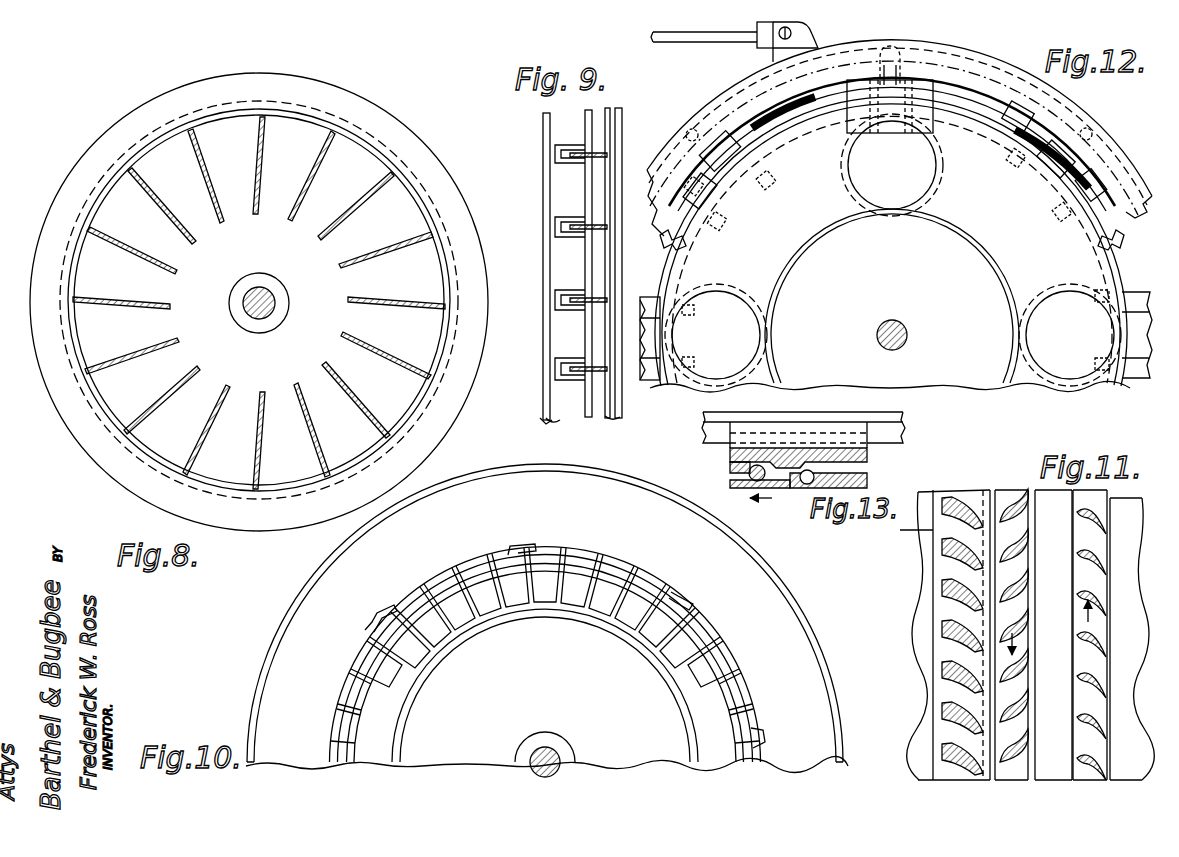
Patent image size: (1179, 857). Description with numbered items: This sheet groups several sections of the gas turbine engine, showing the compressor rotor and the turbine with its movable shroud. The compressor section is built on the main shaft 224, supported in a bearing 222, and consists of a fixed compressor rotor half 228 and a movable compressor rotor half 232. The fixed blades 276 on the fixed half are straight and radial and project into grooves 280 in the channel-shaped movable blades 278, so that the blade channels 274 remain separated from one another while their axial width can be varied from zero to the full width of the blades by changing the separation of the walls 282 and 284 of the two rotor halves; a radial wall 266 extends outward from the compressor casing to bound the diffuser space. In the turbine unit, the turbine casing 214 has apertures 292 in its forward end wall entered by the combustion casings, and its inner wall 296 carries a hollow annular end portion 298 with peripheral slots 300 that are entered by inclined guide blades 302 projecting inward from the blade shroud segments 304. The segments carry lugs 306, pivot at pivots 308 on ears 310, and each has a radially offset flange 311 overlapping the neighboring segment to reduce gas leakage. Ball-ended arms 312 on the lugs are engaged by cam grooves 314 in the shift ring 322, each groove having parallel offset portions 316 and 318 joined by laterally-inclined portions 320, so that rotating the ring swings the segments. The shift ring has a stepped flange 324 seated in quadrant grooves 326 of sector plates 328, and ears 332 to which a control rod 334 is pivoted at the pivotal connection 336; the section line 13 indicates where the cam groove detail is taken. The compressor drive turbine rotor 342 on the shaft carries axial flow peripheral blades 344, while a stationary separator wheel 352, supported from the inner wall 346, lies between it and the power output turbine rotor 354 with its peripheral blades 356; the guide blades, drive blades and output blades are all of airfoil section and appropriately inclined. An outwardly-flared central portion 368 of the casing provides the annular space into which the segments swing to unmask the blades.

In FIG. 12, the section line 13— 13 is at (822, 62).
In FIG. 10, the turbine casing 214 is at (822, 626).
In FIG. 8, the bearing 222 is at (264, 330).
In FIG. 8, the main shaft 224 is at (274, 306).
In FIG. 12, the main shaft 224 is at (907, 335).
In FIG. 10, the main shaft 224 is at (551, 746).
In FIG. 9, the fixed compressor rotor half 228 is at (612, 108).
In FIG. 9, the movable compressor rotor half 232 is at (555, 113).
In FIG. 8, the radial wall 266 is at (440, 424).
In FIG. 9, the radial wall 266 is at (623, 136).
In FIG. 12, the radial wall 266 is at (894, 138).
In FIG. 8, the blade channels 274 is at (358, 168).
In FIG. 9, the blade channels 274 is at (600, 345).
In FIG. 8, the fixed blades 276 is at (130, 270).
In FIG. 9, the fixed blades 276 is at (596, 420).
In FIG. 9, the movable blades 278 is at (570, 312).
In FIG. 9, the grooves 280 is at (568, 228).
In FIG. 9, the wall of fixed rotor half 282 is at (615, 408).
In FIG. 9, the wall of movable rotor half 284 is at (586, 412).
In FIG. 12, the apertures 292 is at (718, 292).
In FIG. 12, the inner wall of turbine casing 296 is at (1000, 258).
In FIG. 12, the hollow annular end portion 298 is at (890, 244).
In FIG. 10, the hollow annular end portion 298 is at (505, 622).
In FIG. 11, the hollow annular end portion 298 is at (922, 638).
In FIG. 11, the peripheral slots 300 is at (925, 536).
In FIG. 10, the guide blades 302 is at (443, 650).
In FIG. 11, the guide blades 302 is at (966, 498).
In FIG. 10, the blade shroud segments 304 is at (463, 570).
In FIG. 12, the lugs 306 is at (878, 130).
In FIG. 12, the pivots 308 is at (886, 46).
In FIG. 12, the ears 310 is at (800, 112).
In FIG. 12, the radially offset flange 311 is at (665, 236).
In FIG. 10, the radially offset flange 311 is at (538, 545).
In FIG. 13, the ball-ended arms 312 is at (730, 467).
In FIG. 12, the cam grooves 314 is at (920, 52).
In FIG. 13, the cam grooves 314 is at (802, 462).
In FIG. 13, the parallel offset portion 316 is at (736, 490).
In FIG. 13, the parallel offset portion 318 is at (805, 486).
In FIG. 13, the laterally-inclined portions 320 is at (785, 490).
In FIG. 12, the shift ring 322 is at (1130, 150).
In FIG. 13, the shift ring 322 is at (862, 467).
In FIG. 12, the stepped flange 324 is at (1018, 78).
In FIG. 13, the stepped flange 324 is at (828, 440).
In FIG. 13, the quadrant grooves 326 is at (890, 406).
In FIG. 12, the sector plates 328 is at (1010, 110).
In FIG. 12, the ears of shift ring 332 is at (752, 58).
In FIG. 12, the control rod 334 is at (690, 42).
In FIG. 12, the pivotal connection 336 is at (750, 20).
In FIG. 11, the compressor drive turbine rotor 342 is at (1012, 780).
In FIG. 11, the axial flow peripheral blades 344 is at (1012, 490).
In FIG. 11, the inner wall of turbine casing 346 is at (1125, 510).
In FIG. 11, the separator wheel 352 is at (1052, 780).
In FIG. 11, the power output turbine rotor 354 is at (1093, 780).
In FIG. 11, the peripheral blades 356 is at (1125, 530).
In FIG. 10, the outwardly-flared central portion 368 is at (840, 698).